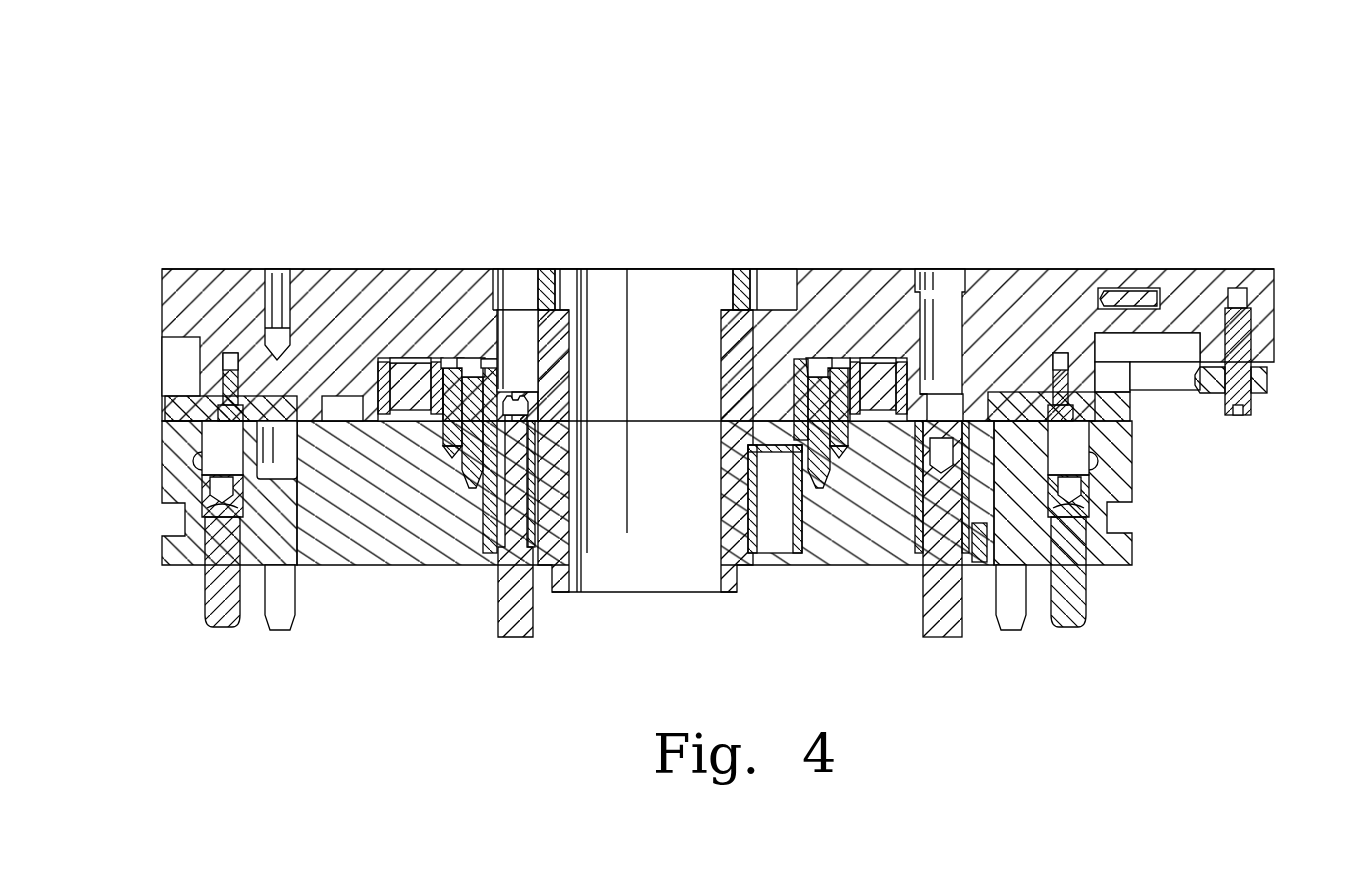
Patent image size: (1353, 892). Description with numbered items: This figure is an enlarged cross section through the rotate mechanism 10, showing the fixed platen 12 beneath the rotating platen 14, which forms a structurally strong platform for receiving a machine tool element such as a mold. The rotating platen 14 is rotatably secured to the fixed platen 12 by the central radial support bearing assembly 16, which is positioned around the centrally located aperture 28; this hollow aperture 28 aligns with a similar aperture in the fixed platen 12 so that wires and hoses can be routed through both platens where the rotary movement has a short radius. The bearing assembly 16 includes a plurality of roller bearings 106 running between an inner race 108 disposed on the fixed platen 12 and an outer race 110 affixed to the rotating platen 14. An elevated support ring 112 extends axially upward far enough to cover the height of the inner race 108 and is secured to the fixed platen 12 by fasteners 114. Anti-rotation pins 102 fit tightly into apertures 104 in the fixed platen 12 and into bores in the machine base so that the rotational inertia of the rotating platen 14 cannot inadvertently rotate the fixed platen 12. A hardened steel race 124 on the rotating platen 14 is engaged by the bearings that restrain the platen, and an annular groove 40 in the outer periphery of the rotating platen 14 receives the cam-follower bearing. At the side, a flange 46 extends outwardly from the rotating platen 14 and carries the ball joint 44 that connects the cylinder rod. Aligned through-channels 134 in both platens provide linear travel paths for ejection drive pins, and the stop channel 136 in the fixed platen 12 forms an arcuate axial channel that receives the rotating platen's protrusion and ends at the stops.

The rotate mechanism 10 is at (1163, 156).
The fixed platen 12 is at (870, 557).
The rotating platen 14 is at (1034, 278).
The central radial support bearing assembly 16 is at (421, 352).
The centrally located aperture 28 is at (722, 332).
The annular groove 40 is at (176, 345).
The ball joint 44 is at (1270, 386).
The flange 46 is at (1236, 300).
The anti-rotation pins 102 is at (222, 626).
The apertures 104 is at (206, 458).
The roller bearings 106 is at (418, 354).
The inner race 108 is at (440, 432).
The outer race 110 is at (380, 400).
The elevated support ring 112 is at (497, 395).
The fasteners 114 is at (437, 416).
The race 124 is at (176, 406).
The through-channels 134 is at (522, 562).
The stop channel 136 is at (297, 416).